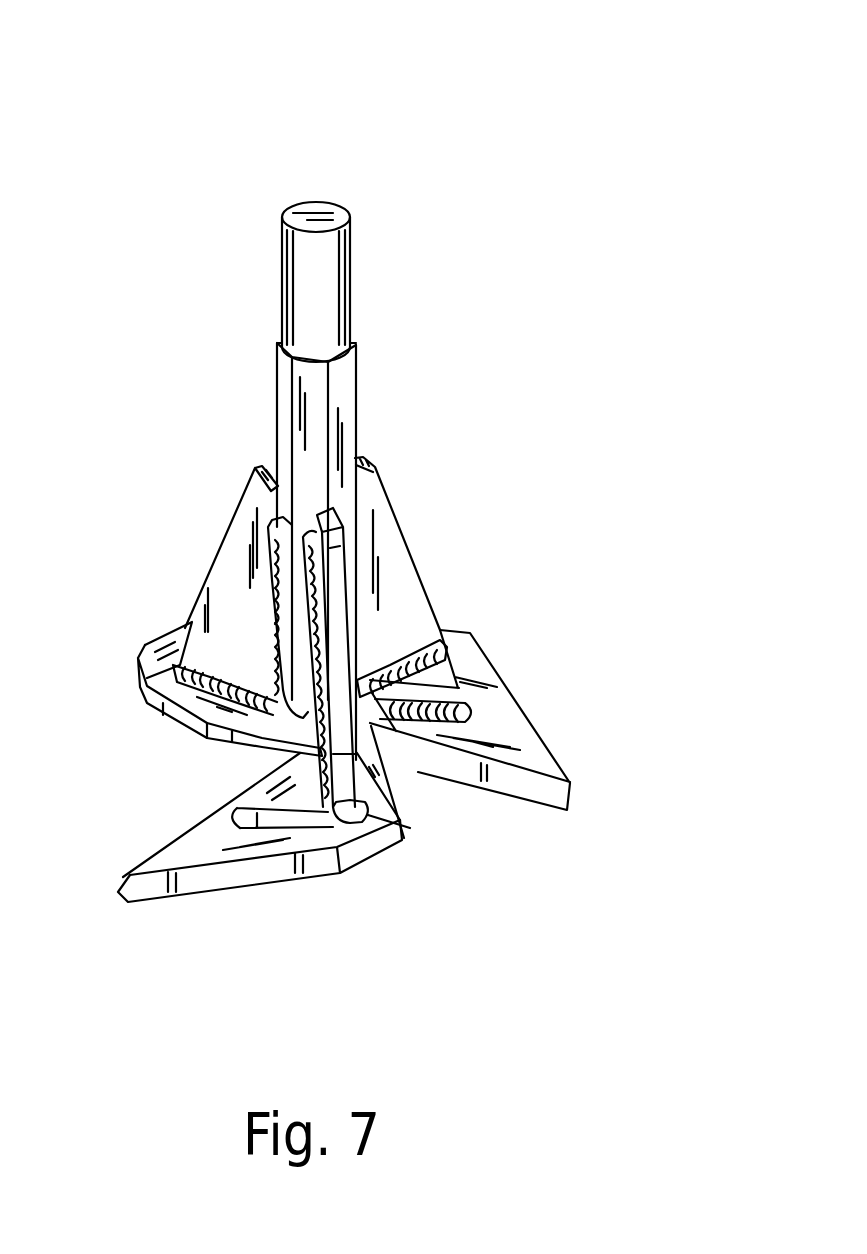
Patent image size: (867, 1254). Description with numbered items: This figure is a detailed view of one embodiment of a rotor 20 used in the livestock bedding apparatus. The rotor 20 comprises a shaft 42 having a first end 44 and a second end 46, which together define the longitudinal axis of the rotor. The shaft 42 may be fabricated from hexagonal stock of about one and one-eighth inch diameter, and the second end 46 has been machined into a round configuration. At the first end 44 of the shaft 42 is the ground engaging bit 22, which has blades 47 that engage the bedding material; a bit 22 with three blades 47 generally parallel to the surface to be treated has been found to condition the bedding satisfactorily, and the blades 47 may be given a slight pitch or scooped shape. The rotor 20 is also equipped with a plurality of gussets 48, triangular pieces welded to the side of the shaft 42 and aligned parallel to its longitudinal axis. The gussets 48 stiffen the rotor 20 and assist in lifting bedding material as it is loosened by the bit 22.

The rotor 20 is at (478, 187).
The ground engaging bit 22 is at (373, 735).
The shaft 42 is at (358, 406).
The first end 44 is at (310, 752).
The second end 46 is at (282, 245).
The blades 47 is at (163, 633).
The gussets 48 is at (213, 557).